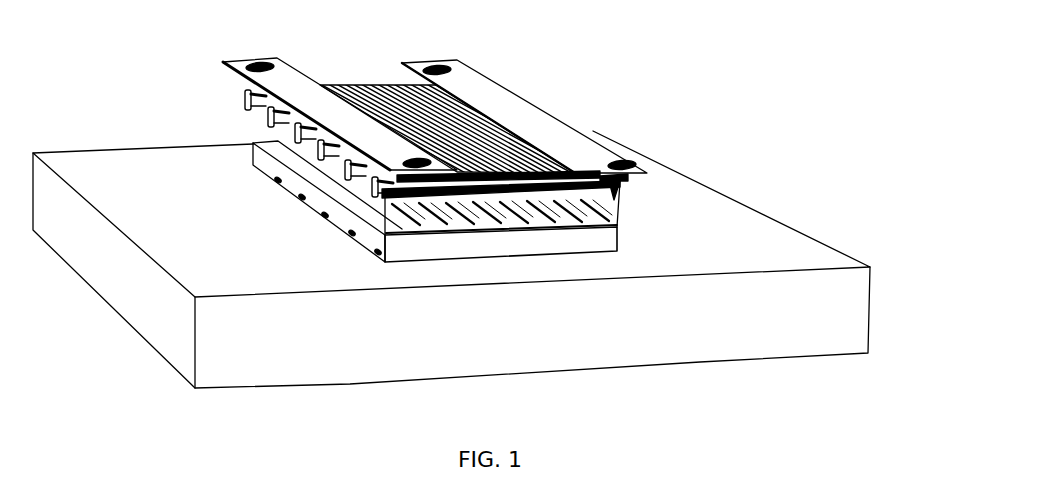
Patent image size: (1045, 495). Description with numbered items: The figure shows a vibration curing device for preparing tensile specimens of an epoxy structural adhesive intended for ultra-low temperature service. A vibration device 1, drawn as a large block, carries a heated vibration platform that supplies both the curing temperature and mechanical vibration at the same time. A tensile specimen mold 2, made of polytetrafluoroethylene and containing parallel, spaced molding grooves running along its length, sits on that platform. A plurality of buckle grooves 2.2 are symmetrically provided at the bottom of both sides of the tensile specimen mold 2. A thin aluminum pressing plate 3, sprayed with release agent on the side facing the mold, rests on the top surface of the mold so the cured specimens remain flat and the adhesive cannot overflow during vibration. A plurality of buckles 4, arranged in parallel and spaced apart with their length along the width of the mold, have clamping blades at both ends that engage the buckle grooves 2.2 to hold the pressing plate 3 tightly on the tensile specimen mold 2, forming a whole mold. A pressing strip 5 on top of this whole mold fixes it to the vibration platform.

The vibration device 1 is at (832, 288).
The tensile specimen mold 2 is at (607, 237).
The buckle grooves 2.2 is at (332, 213).
The pressing plate 3 is at (578, 182).
The buckles 4 is at (538, 142).
The pressing strip 5 is at (512, 104).